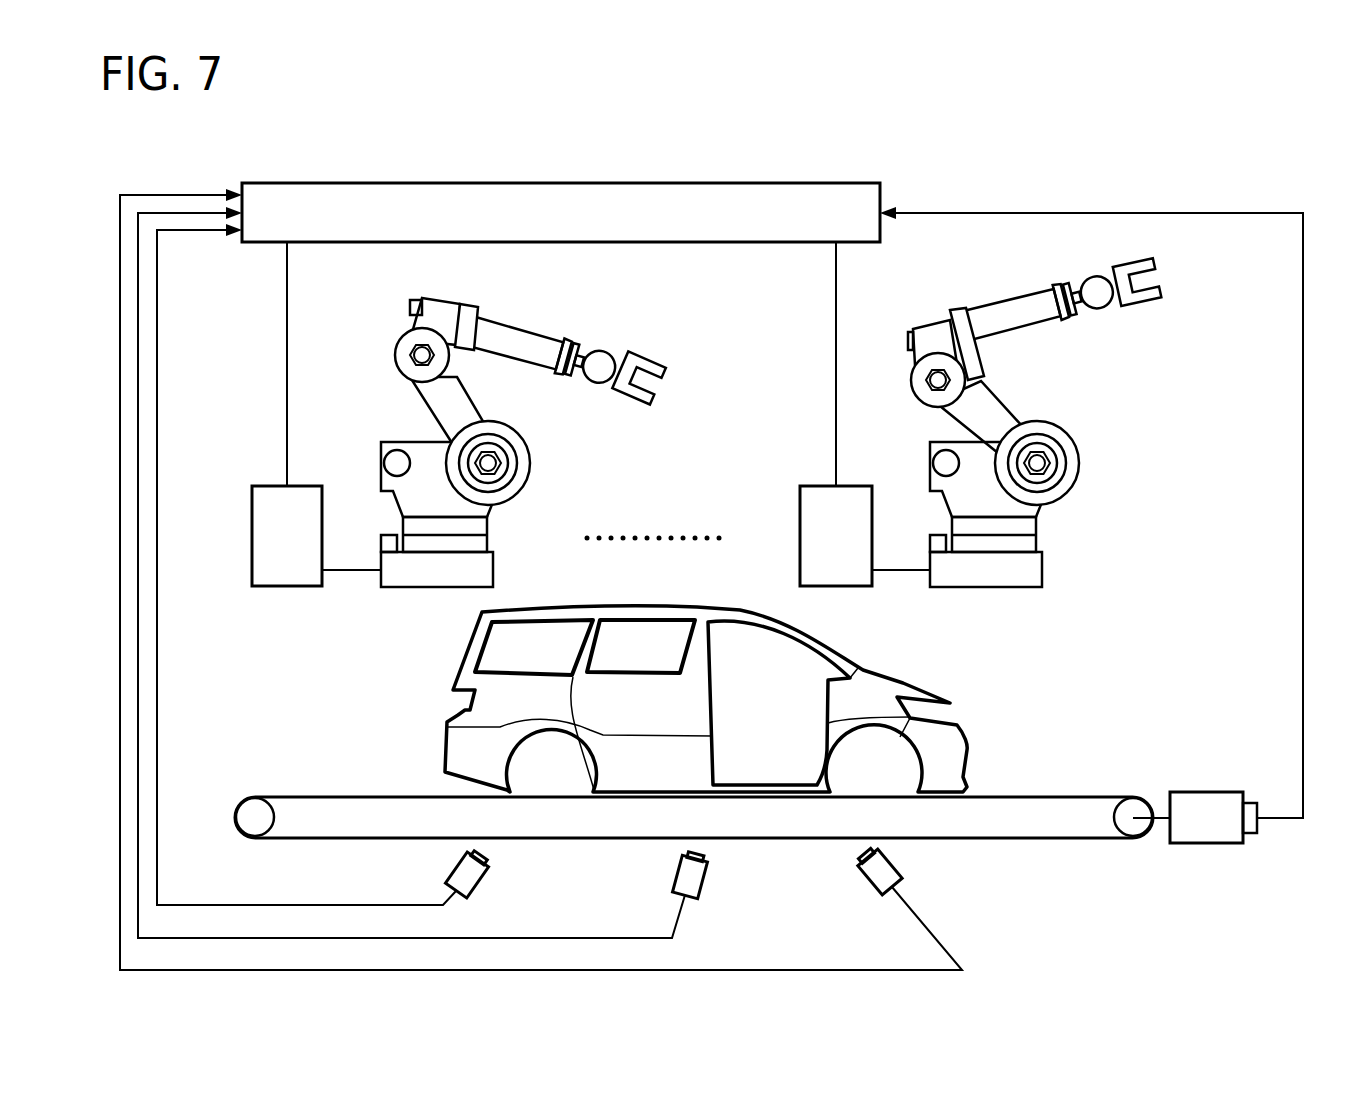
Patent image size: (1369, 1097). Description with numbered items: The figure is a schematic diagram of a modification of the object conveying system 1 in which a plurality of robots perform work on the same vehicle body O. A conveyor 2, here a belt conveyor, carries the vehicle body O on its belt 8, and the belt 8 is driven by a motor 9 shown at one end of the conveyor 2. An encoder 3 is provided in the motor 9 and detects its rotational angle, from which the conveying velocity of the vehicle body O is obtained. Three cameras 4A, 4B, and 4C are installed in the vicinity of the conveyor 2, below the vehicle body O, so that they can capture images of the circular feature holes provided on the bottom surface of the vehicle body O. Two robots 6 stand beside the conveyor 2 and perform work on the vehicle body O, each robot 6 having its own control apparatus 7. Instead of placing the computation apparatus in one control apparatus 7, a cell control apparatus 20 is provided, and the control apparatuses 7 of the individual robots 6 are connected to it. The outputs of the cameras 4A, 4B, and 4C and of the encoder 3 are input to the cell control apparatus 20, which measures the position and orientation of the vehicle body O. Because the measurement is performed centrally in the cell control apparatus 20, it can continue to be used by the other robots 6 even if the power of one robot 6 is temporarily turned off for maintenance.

The object conveying system 1 is at (1074, 196).
The cell control apparatus 20 is at (553, 181).
The control apparatus 7 is at (268, 486).
The robot 6 is at (385, 375).
The vehicle body O is at (468, 634).
The conveyor 2 is at (694, 759).
The belt 8 is at (393, 795).
The motor 9 is at (1205, 845).
The encoder 3 is at (1250, 835).
The camera 4A is at (448, 865).
The camera 4B is at (672, 870).
The camera 4C is at (870, 880).